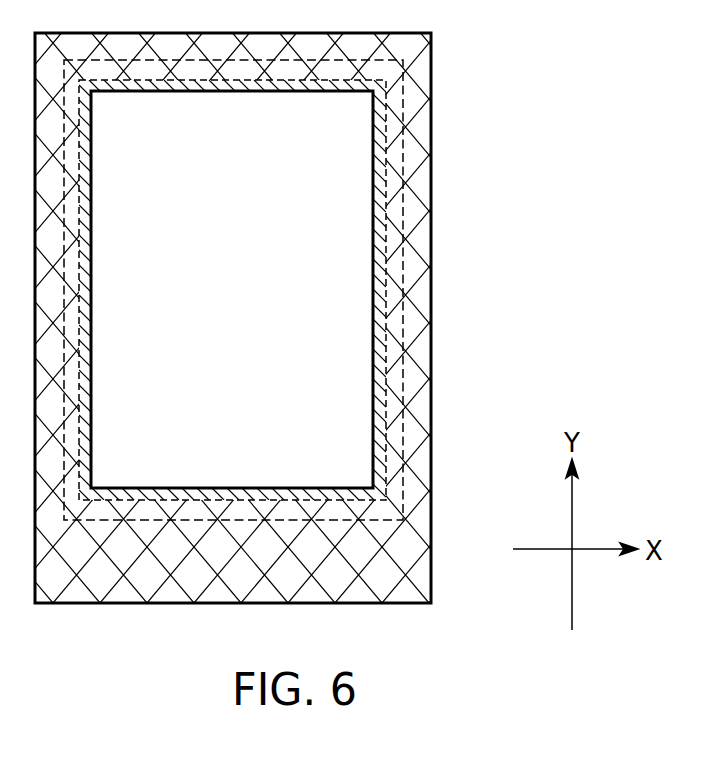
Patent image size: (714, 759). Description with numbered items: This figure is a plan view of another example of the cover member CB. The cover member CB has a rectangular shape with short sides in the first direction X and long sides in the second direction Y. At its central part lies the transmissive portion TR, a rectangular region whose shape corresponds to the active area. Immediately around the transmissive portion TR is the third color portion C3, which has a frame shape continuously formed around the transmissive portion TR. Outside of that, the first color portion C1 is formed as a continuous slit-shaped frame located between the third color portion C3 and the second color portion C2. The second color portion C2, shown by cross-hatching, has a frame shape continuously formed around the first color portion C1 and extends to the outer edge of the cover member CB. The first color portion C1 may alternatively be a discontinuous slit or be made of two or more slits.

The cover member CB is at (465, 46).
The transmissive portion TR is at (347, 183).
The first color portion C1 is at (398, 262).
The second color portion C2 is at (415, 312).
The third color portion C3 is at (383, 355).